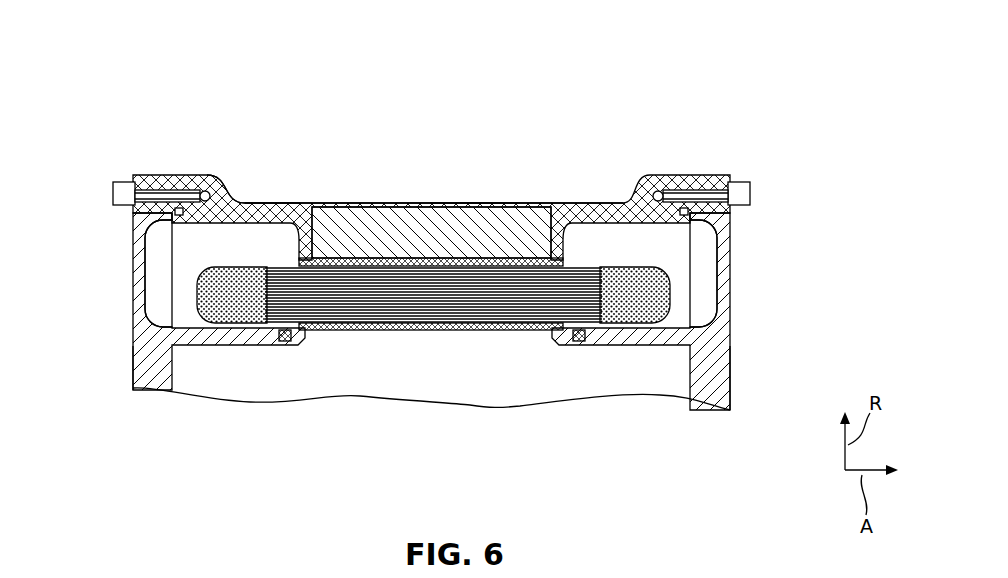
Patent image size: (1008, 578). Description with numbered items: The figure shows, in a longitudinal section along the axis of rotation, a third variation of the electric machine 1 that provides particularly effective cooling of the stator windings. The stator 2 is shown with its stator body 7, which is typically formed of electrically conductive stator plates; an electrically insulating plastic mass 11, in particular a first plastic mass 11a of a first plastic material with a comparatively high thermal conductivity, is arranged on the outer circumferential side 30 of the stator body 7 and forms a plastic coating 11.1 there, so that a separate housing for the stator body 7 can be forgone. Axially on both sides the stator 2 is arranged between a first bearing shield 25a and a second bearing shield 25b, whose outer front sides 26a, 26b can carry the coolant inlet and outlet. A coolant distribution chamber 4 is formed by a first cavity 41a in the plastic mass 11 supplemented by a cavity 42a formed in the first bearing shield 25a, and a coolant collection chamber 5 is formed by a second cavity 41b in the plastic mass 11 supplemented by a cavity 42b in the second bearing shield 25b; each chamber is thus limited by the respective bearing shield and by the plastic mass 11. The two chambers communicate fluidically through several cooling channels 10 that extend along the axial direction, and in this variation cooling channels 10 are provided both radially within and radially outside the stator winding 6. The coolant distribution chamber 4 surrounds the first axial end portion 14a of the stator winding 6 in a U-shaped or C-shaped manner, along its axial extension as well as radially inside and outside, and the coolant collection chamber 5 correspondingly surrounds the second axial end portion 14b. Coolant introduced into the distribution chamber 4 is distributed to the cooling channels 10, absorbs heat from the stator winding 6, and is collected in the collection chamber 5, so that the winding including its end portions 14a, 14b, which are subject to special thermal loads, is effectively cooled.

The electric machine 1 is at (842, 170).
The stator 2 is at (514, 198).
The coolant distribution chamber 4 is at (209, 259).
The coolant collection chamber 5 is at (631, 259).
The stator winding 6 is at (611, 335).
The stator body 7 is at (421, 198).
The cooling channel 10 is at (336, 260).
The plastic mass 11 is at (587, 198).
The plastic coating 11.1 is at (470, 202).
The first plastic mass 11a is at (292, 210).
The first axial end portion 14a is at (195, 294).
The second axial end portion 14b is at (668, 288).
The first bearing shield 25a is at (128, 332).
The second bearing shield 25b is at (737, 341).
The outer front side of the first bearing shield 26a is at (133, 368).
The outer front side of the second bearing shield 26b is at (730, 385).
The outer circumferential side 30 is at (388, 203).
The first cavity 41a is at (240, 240).
The second cavity 41b is at (650, 235).
The cavity in the first bearing shield 42a is at (157, 252).
The cavity in the second bearing shield 42b is at (710, 252).